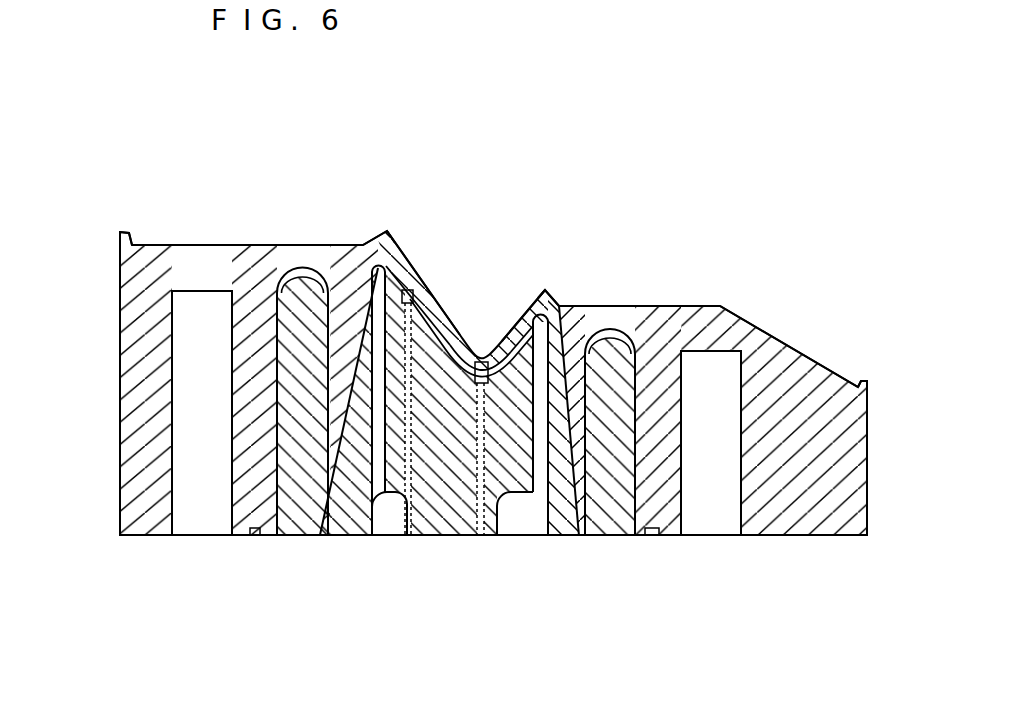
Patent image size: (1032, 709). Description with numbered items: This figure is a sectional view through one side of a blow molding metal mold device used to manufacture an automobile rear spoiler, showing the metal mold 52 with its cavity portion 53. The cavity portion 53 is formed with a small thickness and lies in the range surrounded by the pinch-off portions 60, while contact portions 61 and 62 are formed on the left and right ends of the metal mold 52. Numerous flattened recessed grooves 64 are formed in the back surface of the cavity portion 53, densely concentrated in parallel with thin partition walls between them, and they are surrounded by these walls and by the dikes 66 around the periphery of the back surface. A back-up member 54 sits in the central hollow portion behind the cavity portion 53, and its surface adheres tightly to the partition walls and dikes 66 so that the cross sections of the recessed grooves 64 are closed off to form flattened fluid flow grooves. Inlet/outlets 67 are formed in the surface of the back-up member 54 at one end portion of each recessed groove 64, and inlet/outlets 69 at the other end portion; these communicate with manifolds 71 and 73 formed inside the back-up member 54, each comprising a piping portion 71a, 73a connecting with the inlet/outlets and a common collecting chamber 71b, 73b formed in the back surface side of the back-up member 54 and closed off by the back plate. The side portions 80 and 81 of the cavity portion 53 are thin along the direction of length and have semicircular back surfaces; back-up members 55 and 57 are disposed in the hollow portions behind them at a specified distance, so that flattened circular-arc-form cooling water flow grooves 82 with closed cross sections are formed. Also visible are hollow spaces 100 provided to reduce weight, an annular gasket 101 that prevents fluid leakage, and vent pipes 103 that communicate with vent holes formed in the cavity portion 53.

The metal mold 52 is at (773, 324).
The cavity portion 53 is at (463, 276).
The back-up member 54 is at (465, 515).
The back-up member 55 is at (287, 400).
The back-up member 57 is at (625, 463).
The pinch-off portions 60 is at (375, 262).
The contact portion 61 is at (122, 230).
The contact portion 62 is at (866, 383).
The recessed grooves 64 is at (497, 342).
The dikes 66 is at (322, 262).
The inlet/outlets 67 is at (400, 272).
The inlet/outlets 69 is at (538, 312).
The manifold 71 is at (393, 548).
The piping portion 71a is at (322, 537).
The collecting chamber 71b is at (380, 523).
The manifold 73 is at (520, 551).
The piping portion 73a is at (588, 520).
The collecting chamber 73b is at (532, 525).
The side portion 80 is at (290, 236).
The side portion 81 is at (636, 295).
The cooling water flow grooves 82 is at (262, 258).
The hollow spaces 100 is at (183, 346).
The annular gasket 101 is at (253, 536).
The vent pipes 103 is at (437, 270).